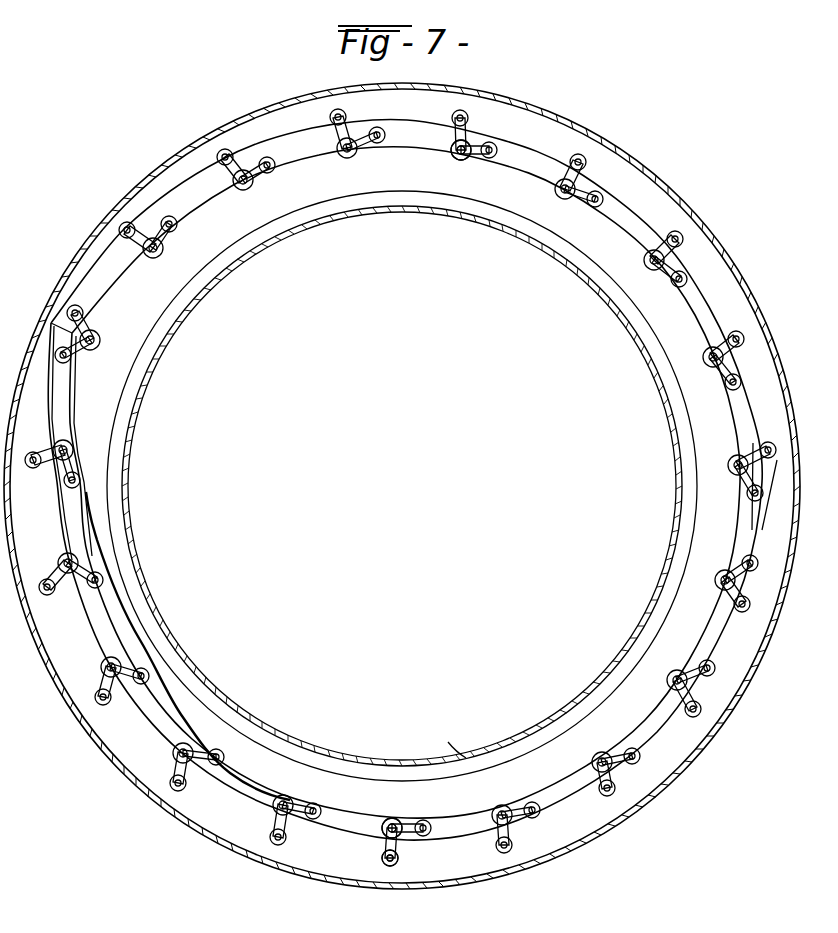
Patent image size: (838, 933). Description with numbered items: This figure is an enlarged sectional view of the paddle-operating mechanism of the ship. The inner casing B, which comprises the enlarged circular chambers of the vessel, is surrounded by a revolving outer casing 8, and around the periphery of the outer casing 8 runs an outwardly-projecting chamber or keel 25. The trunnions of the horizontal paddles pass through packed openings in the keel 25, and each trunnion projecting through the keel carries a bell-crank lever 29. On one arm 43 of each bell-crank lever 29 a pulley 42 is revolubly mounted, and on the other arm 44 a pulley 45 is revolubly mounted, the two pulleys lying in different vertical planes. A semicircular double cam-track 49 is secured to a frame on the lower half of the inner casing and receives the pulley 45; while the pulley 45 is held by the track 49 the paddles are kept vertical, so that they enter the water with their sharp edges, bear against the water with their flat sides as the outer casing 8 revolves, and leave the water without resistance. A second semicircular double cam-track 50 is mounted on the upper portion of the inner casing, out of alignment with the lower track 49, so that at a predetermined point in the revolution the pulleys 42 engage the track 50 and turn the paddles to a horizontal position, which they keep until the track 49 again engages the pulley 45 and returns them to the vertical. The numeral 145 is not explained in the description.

The keel 25 is at (742, 294).
The outer casing 8 is at (412, 479).
The casing B is at (155, 358).
The semicircular double cam-track 50 is at (528, 170).
The arm 44 is at (455, 140).
The pulley 45 is at (470, 117).
The pulley 42 is at (500, 151).
The arm 43 is at (469, 160).
The bell-crank lever 29 is at (392, 817).
The pin 145 is at (438, 822).
The semicircular double cam-track 49 is at (484, 845).